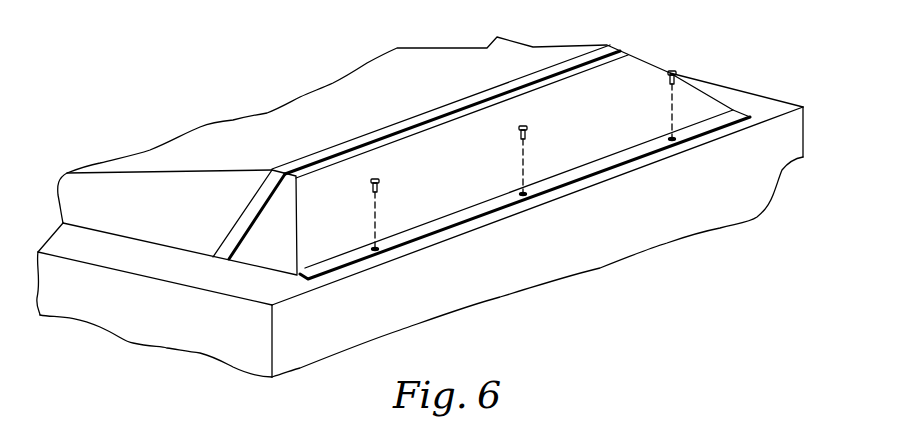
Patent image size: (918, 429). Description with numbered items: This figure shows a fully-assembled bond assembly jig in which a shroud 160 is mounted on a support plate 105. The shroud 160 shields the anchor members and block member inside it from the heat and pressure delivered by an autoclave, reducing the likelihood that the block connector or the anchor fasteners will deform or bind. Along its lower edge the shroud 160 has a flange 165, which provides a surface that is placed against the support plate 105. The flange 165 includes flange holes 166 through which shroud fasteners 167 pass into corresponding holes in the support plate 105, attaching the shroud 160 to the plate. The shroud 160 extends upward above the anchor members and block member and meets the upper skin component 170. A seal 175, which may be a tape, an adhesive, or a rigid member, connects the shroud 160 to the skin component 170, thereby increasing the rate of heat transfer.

The support plate 105 is at (202, 278).
The upper skin component 170 is at (193, 147).
The seal 175 is at (425, 117).
The shroud 160 is at (525, 216).
The flange 165 is at (362, 265).
The flange holes 166 is at (384, 250).
The shroud fasteners 167 is at (383, 187).